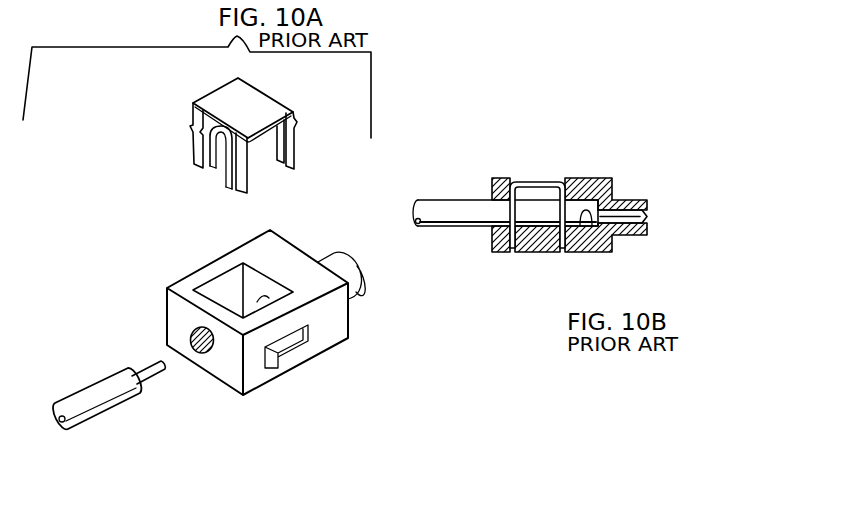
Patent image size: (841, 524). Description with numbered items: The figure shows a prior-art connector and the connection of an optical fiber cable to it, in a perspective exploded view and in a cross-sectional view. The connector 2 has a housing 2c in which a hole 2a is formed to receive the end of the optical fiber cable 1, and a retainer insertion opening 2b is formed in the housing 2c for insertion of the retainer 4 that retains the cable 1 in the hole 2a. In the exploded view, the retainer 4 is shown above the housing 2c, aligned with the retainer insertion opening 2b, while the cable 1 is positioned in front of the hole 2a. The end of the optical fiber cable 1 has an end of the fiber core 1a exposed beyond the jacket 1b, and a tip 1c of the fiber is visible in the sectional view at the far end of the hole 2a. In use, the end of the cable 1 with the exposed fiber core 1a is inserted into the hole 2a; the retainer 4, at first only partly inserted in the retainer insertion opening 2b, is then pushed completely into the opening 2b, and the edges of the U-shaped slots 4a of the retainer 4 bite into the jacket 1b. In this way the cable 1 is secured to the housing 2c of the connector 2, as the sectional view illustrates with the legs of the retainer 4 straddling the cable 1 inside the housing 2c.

In FIG. 10A, the optical fiber cable 1 is at (122, 394).
In FIG. 10B, the optical fiber cable 1 is at (559, 242).
In FIG. 10A, the fiber core 1a is at (162, 373).
In FIG. 10B, the fiber core 1a is at (626, 230).
In FIG. 10A, the jacket 1b is at (137, 397).
In FIG. 10B, the pin tip 1c is at (652, 217).
In FIG. 10A, the connector 2 is at (251, 327).
In FIG. 10B, the connector 2 is at (569, 212).
In FIG. 10A, the hole 2a is at (203, 354).
In FIG. 10B, the hole 2a is at (585, 228).
In FIG. 10A, the retainer insertion opening 2b is at (232, 296).
In FIG. 10B, the retainer insertion opening 2b is at (560, 180).
In FIG. 10A, the housing 2c is at (327, 340).
In FIG. 10A, the retainer 4 is at (242, 131).
In FIG. 10B, the retainer 4 is at (537, 183).
In FIG. 10A, the U-shaped slots 4a is at (220, 154).